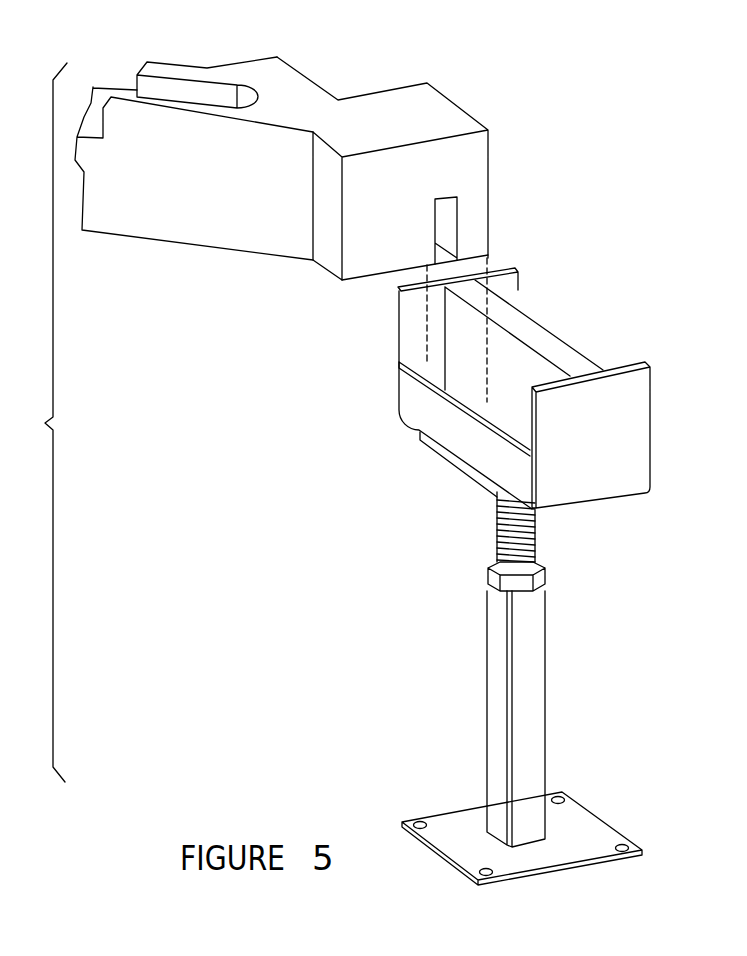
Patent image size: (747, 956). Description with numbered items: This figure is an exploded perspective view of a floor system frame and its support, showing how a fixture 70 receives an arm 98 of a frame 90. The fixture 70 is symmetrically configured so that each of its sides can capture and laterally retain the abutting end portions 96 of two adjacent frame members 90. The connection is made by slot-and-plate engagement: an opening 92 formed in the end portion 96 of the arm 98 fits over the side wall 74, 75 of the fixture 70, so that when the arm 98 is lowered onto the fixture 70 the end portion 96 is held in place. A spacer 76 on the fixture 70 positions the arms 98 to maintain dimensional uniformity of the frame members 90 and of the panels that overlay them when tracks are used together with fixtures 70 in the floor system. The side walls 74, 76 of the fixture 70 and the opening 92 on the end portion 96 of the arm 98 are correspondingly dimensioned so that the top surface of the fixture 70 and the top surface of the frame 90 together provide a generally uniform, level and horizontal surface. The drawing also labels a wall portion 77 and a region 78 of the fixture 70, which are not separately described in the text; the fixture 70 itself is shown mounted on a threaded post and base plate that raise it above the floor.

The fixture 70 is at (674, 513).
The side wall 74 is at (531, 421).
The side wall 75 is at (462, 451).
The spacer 76 is at (528, 330).
The bracket front wall 77 is at (596, 491).
The bracket opening 78 is at (377, 372).
The frame 90 is at (344, 220).
The opening 92 is at (447, 240).
The end portion 96 is at (365, 284).
The arm 98 is at (160, 244).